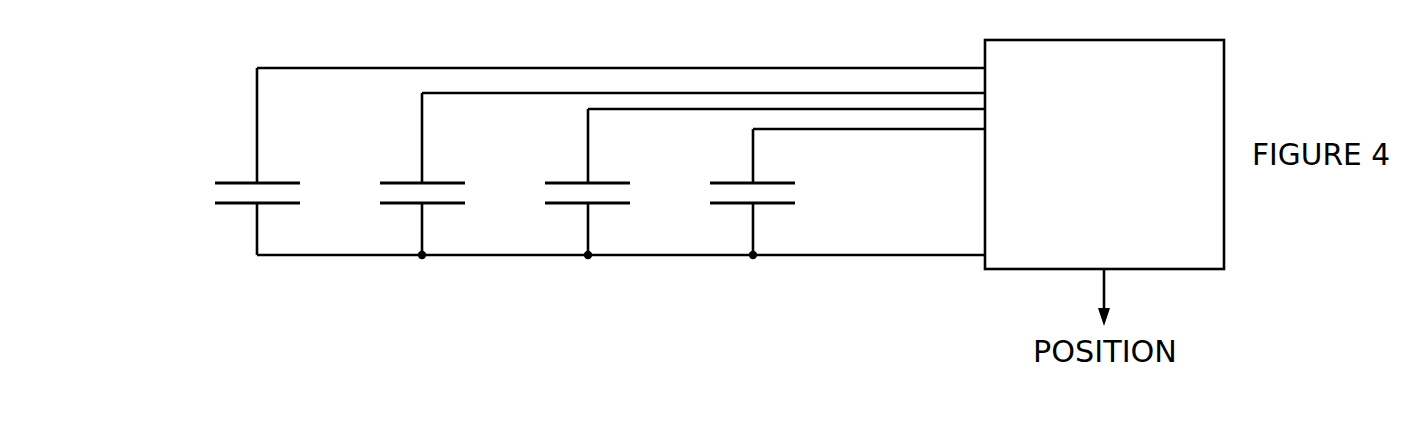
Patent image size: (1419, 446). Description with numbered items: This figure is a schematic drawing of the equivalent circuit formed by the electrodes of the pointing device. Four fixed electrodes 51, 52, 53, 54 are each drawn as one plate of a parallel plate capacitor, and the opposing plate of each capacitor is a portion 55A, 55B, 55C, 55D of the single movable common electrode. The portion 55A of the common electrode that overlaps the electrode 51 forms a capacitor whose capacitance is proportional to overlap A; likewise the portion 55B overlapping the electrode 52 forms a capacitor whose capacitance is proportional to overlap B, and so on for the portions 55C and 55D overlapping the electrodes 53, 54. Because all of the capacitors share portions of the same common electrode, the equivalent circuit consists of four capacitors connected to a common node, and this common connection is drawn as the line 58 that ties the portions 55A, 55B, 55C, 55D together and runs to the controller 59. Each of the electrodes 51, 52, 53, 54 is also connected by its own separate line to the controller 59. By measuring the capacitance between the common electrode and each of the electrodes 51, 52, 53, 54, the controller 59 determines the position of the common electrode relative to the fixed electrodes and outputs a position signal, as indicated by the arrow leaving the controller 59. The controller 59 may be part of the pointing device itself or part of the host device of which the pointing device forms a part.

The electrode 51 is at (227, 182).
The electrode 52 is at (392, 182).
The electrode 53 is at (557, 182).
The electrode 54 is at (722, 182).
The portion of common electrode 55A is at (228, 206).
The portion of common electrode 55B is at (393, 206).
The portion of common electrode 55C is at (558, 206).
The portion of common electrode 55D is at (723, 206).
The common line 58 is at (858, 257).
The controller 59 is at (1124, 203).